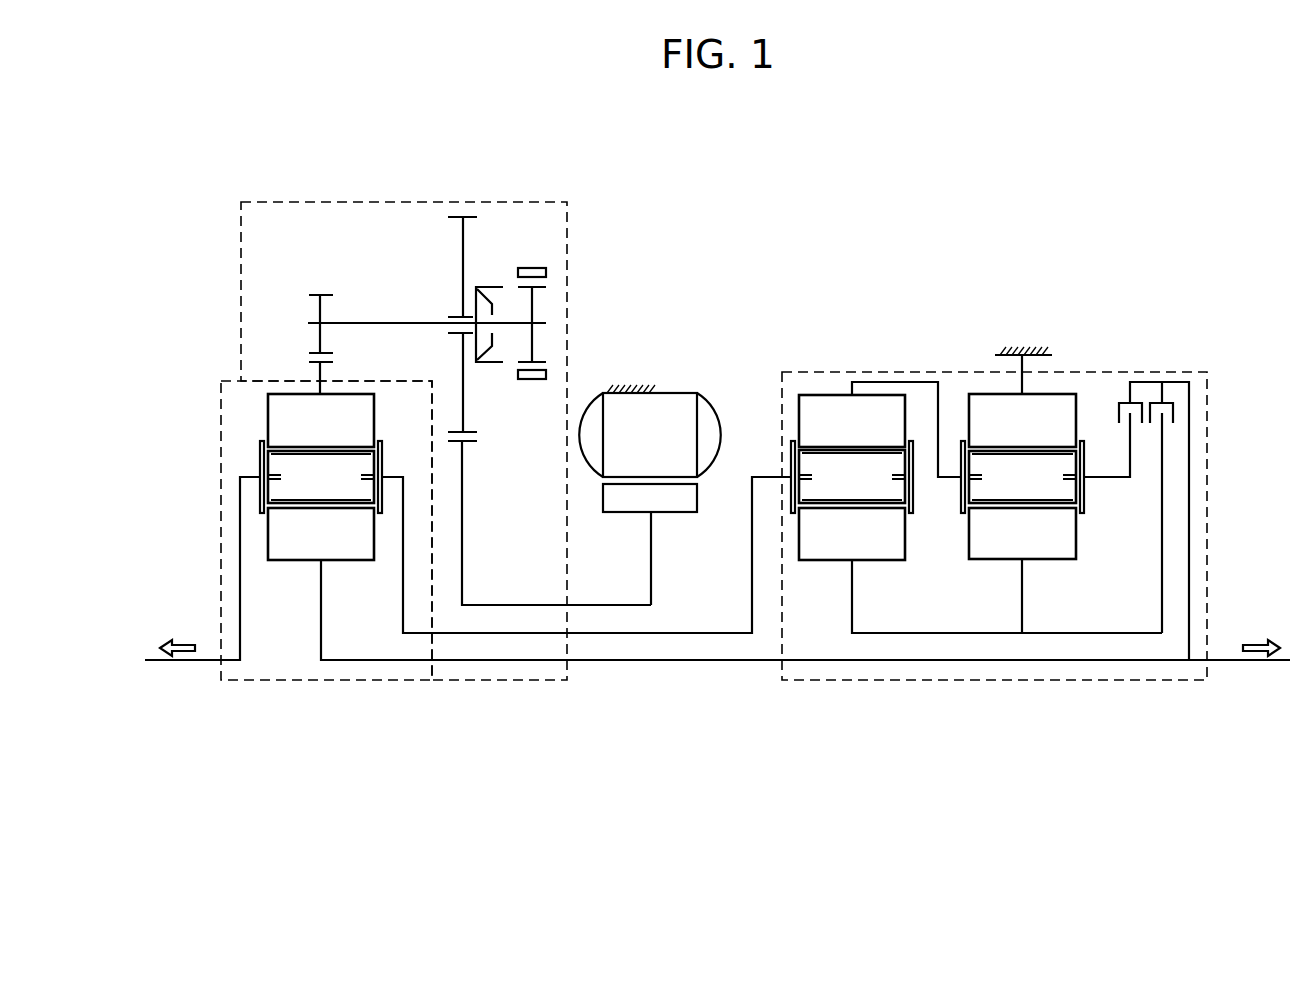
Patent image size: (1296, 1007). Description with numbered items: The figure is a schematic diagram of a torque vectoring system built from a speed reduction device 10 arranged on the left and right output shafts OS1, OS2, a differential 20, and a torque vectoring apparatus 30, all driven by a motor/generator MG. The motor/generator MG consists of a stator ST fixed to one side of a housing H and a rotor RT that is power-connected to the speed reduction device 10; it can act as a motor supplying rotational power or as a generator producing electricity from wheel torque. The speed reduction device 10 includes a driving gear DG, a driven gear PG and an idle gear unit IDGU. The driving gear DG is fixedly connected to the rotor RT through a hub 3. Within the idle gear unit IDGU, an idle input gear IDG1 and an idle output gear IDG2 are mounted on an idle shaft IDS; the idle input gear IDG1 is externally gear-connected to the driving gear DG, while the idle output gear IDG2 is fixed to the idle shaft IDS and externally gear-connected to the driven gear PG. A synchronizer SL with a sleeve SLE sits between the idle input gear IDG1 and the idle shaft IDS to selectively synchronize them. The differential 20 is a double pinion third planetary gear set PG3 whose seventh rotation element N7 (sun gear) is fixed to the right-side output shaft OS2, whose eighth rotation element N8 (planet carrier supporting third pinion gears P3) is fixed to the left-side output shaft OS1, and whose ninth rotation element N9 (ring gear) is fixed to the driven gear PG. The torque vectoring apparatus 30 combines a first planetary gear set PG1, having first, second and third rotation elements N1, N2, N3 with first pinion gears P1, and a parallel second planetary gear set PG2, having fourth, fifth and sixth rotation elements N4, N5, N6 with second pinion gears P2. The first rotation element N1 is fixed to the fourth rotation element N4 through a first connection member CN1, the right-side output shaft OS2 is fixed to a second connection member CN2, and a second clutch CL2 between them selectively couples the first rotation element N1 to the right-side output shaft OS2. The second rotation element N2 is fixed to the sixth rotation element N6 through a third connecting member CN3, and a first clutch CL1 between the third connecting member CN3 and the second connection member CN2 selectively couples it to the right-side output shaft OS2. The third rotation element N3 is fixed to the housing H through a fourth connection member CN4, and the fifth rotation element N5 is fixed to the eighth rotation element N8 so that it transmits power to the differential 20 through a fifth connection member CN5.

The speed reduction device 10 is at (404, 480).
The differential 20 is at (326, 570).
The torque vectoring apparatus 30 is at (994, 565).
The idle gear unit IDGU is at (313, 192).
The idle input gear IDG1 is at (435, 324).
The idle output gear IDG2 is at (288, 344).
The idle shaft IDS is at (427, 349).
The driving gear DG is at (549, 523).
The driven gear PG is at (291, 366).
The synchronizer SL is at (549, 305).
The sleeve SLE is at (527, 299).
The motor/generator MG is at (652, 449).
The stator ST is at (652, 412).
The rotor RT is at (649, 524).
The hub 3 is at (633, 558).
The housing H is at (828, 349).
The third planetary gear set PG3 is at (271, 576).
The ninth rotation element N9 is at (321, 420).
The third pinion gears P3 is at (321, 477).
The seventh rotation element N7 is at (321, 534).
The eighth rotation element N8 is at (271, 475).
The second planetary gear set PG2 is at (803, 577).
The sixth rotation element N6 is at (852, 421).
The second pinion gears P2 is at (852, 476).
The fourth rotation element N4 is at (852, 534).
The fifth rotation element N5 is at (803, 501).
The first planetary gear set PG1 is at (1054, 576).
The third rotation element N3 is at (1022, 420).
The first pinion gears P1 is at (1022, 477).
The first rotation element N1 is at (1022, 533).
The second rotation element N2 is at (1054, 490).
The left-side output shaft OS1 is at (199, 598).
The right-side output shaft OS2 is at (806, 639).
The first connection member CN1 is at (1007, 639).
The second connection member CN2 is at (1200, 521).
The third connecting member CN3 is at (906, 401).
The fourth connection member CN4 is at (974, 355).
The fifth connection member CN5 is at (586, 599).
The first clutch CL1 is at (1113, 398).
The second clutch CL2 is at (1174, 476).